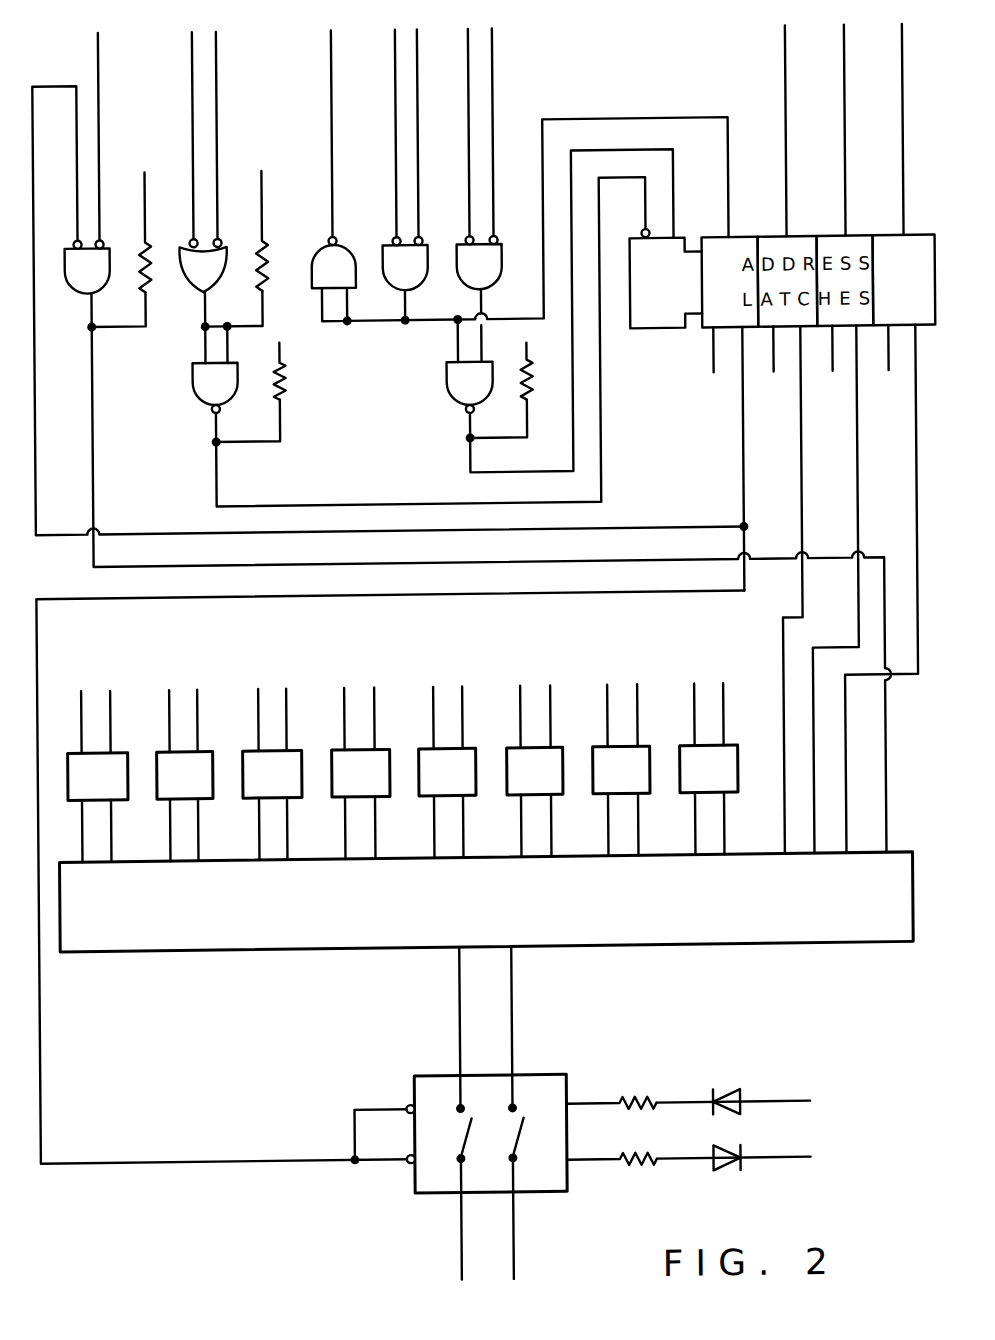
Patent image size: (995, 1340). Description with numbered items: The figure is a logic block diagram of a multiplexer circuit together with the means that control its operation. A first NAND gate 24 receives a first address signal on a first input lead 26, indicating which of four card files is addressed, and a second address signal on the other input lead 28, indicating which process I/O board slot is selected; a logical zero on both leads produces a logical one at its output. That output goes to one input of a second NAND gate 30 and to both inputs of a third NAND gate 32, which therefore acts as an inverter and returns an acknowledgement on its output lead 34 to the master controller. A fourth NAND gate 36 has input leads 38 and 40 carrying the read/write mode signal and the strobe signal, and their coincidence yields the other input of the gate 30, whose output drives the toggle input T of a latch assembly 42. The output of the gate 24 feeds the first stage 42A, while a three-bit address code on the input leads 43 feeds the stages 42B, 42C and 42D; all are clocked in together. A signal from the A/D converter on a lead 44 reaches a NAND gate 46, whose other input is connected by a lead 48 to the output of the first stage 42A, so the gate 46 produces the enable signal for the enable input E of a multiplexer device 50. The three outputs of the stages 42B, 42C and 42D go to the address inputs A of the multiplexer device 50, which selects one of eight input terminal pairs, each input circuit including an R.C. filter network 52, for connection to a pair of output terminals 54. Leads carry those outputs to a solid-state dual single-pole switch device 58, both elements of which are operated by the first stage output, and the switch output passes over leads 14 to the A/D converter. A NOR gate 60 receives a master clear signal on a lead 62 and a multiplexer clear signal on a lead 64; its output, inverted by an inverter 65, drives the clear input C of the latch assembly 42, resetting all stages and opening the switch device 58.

The leads 14 is at (457, 1273).
The first NAND gate 24 is at (403, 289).
The first input lead 26 is at (423, 68).
The other input lead 28 is at (400, 62).
The second NAND gate 30 is at (449, 398).
The third NAND gate 32 is at (316, 249).
The output lead 34 is at (336, 62).
The fourth NAND gate 36 is at (473, 290).
The input lead 38 is at (474, 88).
The input lead 40 is at (498, 64).
The latch assembly 42 is at (671, 345).
The first stage 42A is at (750, 239).
The latch stage 42B is at (805, 239).
The latch stage 42C is at (863, 239).
The latch stage 42D is at (920, 239).
The input leads 43 is at (907, 122).
The lead 44 is at (104, 68).
The NAND gate 46 is at (85, 290).
The lead 48 is at (156, 529).
The multiplexer device 50 is at (791, 949).
The R.C. filter network 52 is at (156, 763).
The output terminals 54 is at (457, 1052).
The switch device 58 is at (551, 1075).
The NOR gate 60 is at (202, 290).
The lead 62 is at (197, 87).
The lead 64 is at (222, 67).
The inverter 65 is at (197, 397).